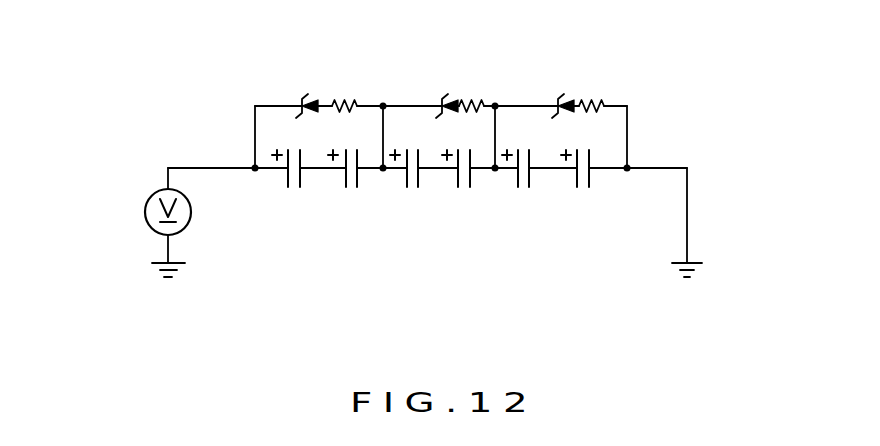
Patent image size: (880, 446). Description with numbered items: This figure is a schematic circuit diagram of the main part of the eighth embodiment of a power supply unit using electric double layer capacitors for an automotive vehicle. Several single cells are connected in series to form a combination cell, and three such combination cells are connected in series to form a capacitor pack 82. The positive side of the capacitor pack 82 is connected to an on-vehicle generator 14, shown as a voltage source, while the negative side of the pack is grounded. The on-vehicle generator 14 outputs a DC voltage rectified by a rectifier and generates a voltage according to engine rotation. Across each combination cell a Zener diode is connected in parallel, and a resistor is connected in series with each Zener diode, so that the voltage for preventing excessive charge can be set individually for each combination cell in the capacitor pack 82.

The on-vehicle generator 14 is at (150, 228).
The capacitor pack 82 is at (442, 238).